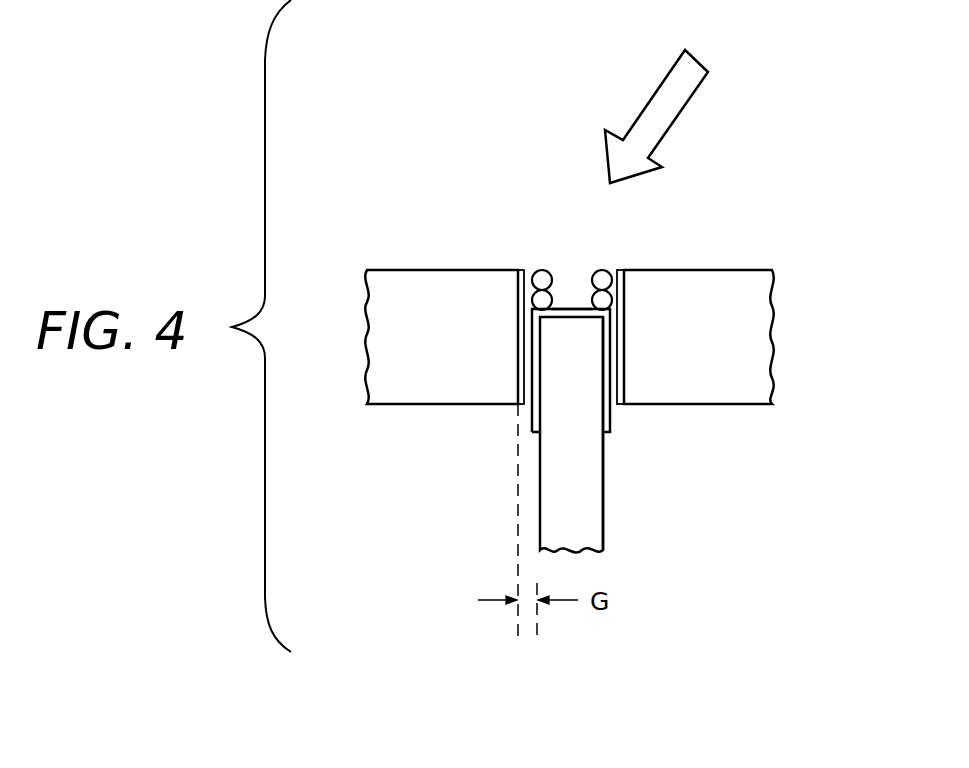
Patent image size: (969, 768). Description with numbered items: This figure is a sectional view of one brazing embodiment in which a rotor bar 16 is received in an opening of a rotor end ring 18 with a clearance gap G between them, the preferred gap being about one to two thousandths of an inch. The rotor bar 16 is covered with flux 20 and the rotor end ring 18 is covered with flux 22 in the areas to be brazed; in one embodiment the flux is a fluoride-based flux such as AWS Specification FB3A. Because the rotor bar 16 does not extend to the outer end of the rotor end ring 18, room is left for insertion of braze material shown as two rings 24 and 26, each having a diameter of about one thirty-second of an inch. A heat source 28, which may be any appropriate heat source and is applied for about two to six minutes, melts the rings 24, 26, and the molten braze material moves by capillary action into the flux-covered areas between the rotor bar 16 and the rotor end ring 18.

The rotor bar 16 is at (588, 504).
The rotor end ring 18 is at (466, 352).
The flux 20 is at (608, 436).
The flux 22 is at (617, 412).
The ring of braze material 24 is at (584, 309).
The ring of braze material 26 is at (534, 271).
The heat source 28 is at (690, 135).